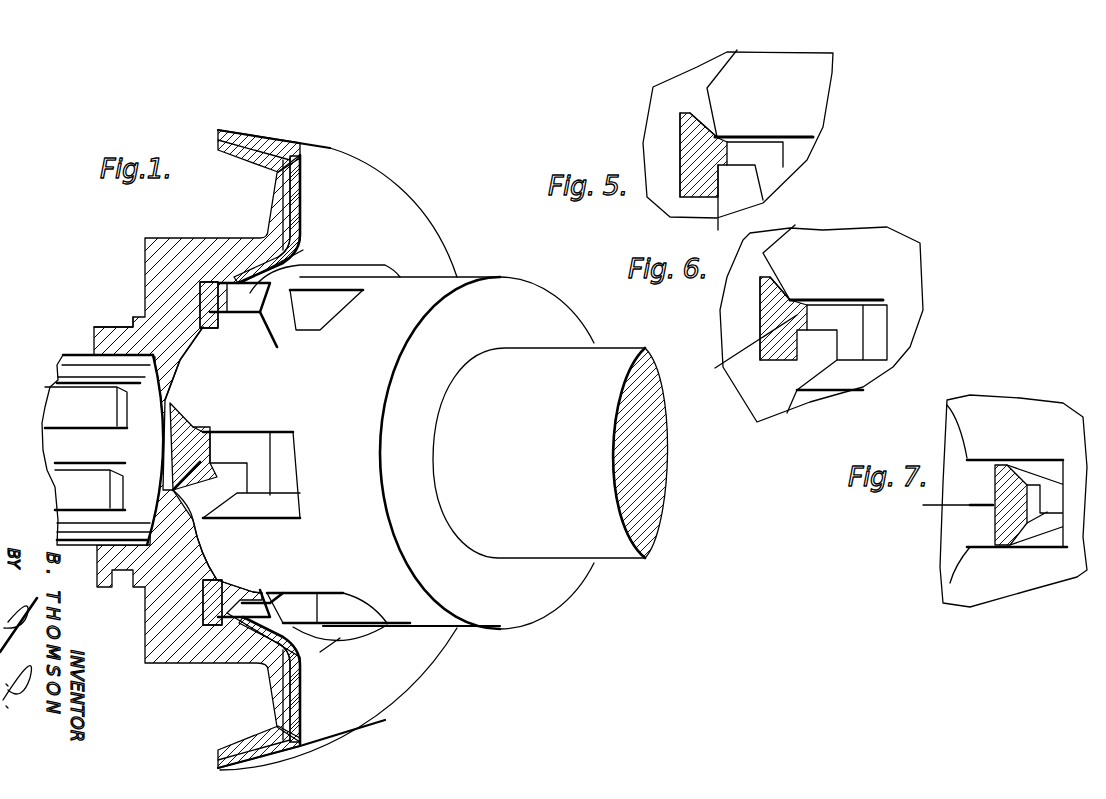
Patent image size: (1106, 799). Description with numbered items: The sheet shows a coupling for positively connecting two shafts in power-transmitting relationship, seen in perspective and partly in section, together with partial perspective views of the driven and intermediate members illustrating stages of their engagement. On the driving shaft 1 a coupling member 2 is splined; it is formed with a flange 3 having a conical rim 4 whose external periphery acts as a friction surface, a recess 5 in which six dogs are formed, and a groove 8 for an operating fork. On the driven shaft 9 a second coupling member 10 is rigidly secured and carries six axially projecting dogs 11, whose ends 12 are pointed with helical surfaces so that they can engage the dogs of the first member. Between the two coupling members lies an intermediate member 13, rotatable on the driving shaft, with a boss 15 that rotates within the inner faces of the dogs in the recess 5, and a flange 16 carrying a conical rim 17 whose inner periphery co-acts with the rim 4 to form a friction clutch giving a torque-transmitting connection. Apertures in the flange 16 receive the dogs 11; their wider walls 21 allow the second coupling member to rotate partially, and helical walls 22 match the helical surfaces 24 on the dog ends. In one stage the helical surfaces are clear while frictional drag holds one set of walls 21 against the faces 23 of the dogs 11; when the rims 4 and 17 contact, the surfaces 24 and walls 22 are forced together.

In FIG. 1, the driving shaft 1 is at (83, 458).
In FIG. 1, the coupling member 2 is at (145, 625).
In FIG. 1, the flange 3 is at (272, 190).
In FIG. 1, the conical rim 4 is at (237, 153).
In FIG. 1, the recess 5 is at (213, 292).
In FIG. 1, the groove 8 is at (117, 327).
In FIG. 1, the driven shaft 9 is at (555, 425).
In FIG. 1, the second coupling member 10 is at (406, 610).
In FIG. 1, the axially projecting dogs 11 is at (301, 471).
In FIG. 5, the axially projecting dogs 11 is at (738, 141).
In FIG. 6, the axially projecting dogs 11 is at (813, 420).
In FIG. 7, the axially projecting dogs 11 is at (1033, 422).
In FIG. 1, the ends of the dogs 12 is at (177, 380).
In FIG. 5, the ends of the dogs 12 is at (730, 55).
In FIG. 6, the ends of the dogs 12 is at (795, 225).
In FIG. 7, the ends of the dogs 12 is at (970, 397).
In FIG. 1, the intermediate member 13 is at (413, 215).
In FIG. 1, the boss 15 is at (193, 467).
In FIG. 1, the flange 16 is at (300, 208).
In FIG. 1, the conical rim 17 is at (250, 147).
In FIG. 5, the walls of the apertures 21 is at (680, 173).
In FIG. 6, the walls of the apertures 21 is at (783, 357).
In FIG. 5, the walls 22 is at (703, 117).
In FIG. 6, the walls 22 is at (765, 282).
In FIG. 5, the faces of the dogs 23 is at (723, 136).
In FIG. 6, the faces of the dogs 23 is at (860, 298).
In FIG. 5, the helical surfaces 24 is at (703, 125).
In FIG. 6, the helical surfaces 24 is at (783, 293).